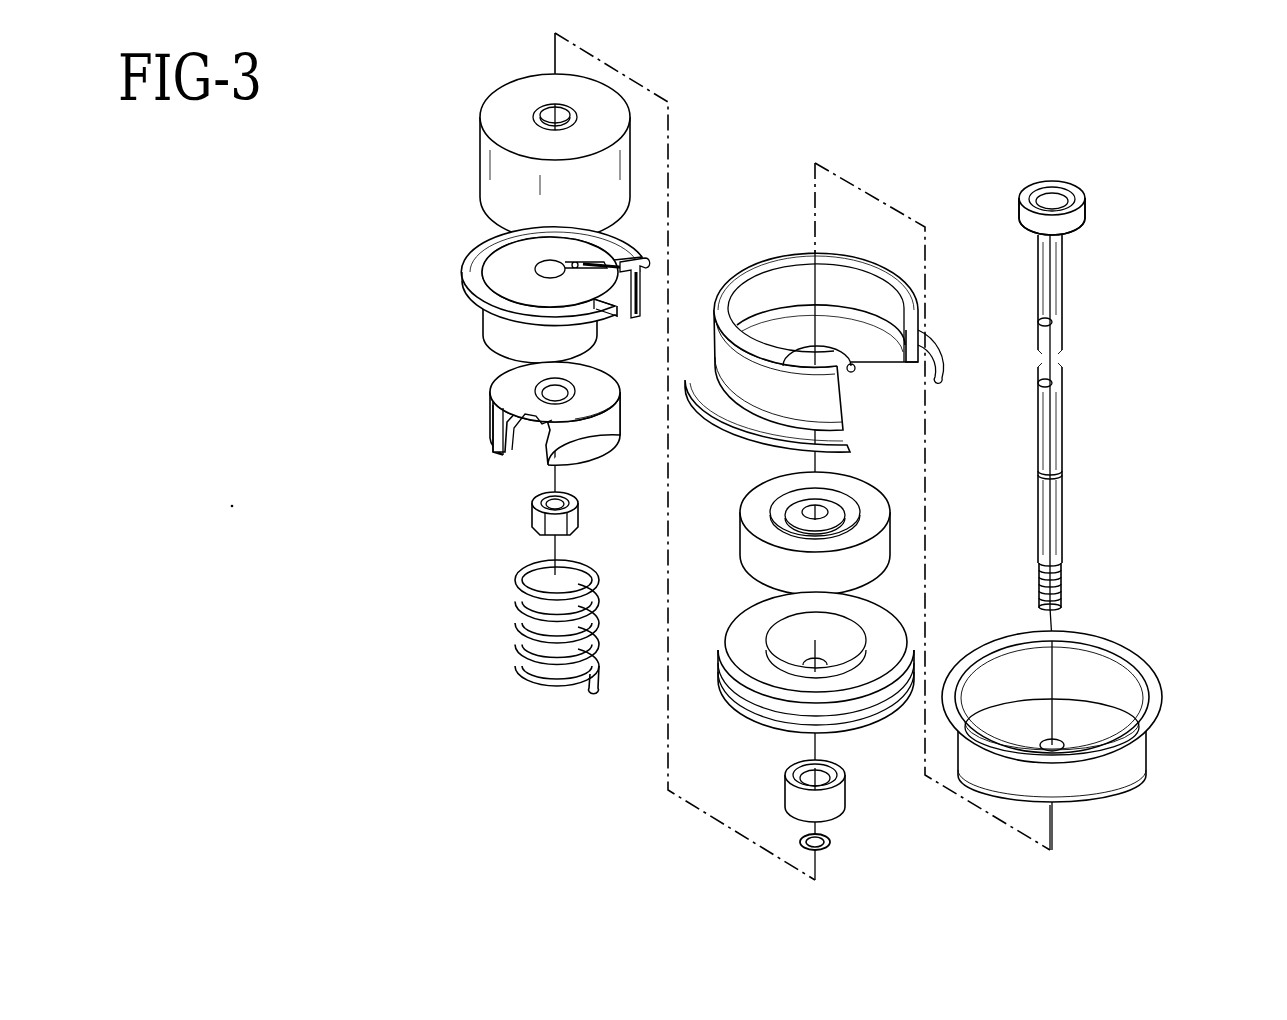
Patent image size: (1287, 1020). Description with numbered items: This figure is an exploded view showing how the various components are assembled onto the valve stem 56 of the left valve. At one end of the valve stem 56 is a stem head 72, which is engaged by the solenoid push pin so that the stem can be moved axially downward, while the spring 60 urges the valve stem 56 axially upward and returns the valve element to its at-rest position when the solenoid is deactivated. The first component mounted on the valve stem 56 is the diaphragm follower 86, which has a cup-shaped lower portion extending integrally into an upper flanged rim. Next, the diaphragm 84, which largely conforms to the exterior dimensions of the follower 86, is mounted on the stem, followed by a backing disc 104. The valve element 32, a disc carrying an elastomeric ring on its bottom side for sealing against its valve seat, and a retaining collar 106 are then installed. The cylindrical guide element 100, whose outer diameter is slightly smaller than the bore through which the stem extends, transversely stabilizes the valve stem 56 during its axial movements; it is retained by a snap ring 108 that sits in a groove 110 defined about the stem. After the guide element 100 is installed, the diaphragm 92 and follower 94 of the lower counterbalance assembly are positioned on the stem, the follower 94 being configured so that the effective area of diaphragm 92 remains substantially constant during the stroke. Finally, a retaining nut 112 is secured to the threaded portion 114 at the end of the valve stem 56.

The guide element 100 is at (480, 150).
The diaphragm 92 is at (503, 273).
The follower 94 is at (490, 417).
The retaining nut 112 is at (533, 508).
The spring 60 is at (515, 633).
The diaphragm 84 is at (777, 283).
The backing disc 104 is at (866, 503).
The valve element 32 is at (748, 630).
The retaining collar 106 is at (785, 790).
The snap ring 108 is at (828, 848).
The stem head 72 is at (1022, 192).
The valve stem 56 is at (1083, 351).
The groove 110 is at (1062, 472).
The threaded portion 114 is at (1062, 588).
The diaphragm follower 86 is at (1150, 672).